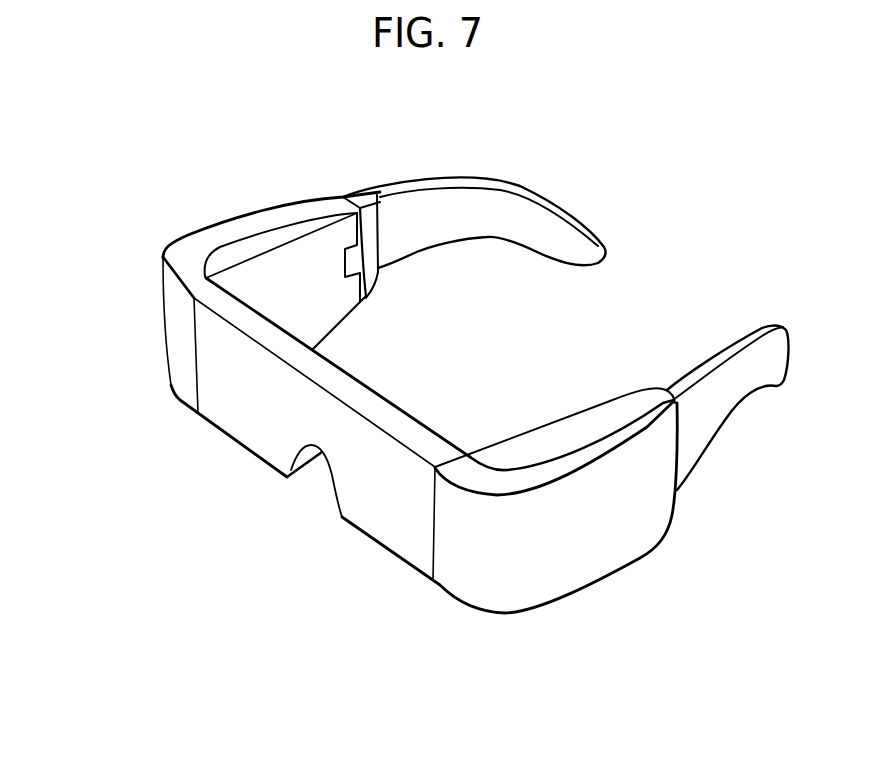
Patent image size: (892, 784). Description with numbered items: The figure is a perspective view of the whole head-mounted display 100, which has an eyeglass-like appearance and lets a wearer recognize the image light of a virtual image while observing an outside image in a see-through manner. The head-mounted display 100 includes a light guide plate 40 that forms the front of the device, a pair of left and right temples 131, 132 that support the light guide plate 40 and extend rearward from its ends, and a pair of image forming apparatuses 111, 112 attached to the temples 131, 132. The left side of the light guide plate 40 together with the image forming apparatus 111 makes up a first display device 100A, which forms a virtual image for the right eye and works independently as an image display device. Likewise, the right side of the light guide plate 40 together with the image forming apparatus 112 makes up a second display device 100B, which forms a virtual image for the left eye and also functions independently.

The head-mounted display 100 is at (600, 113).
The first display device 100A is at (149, 190).
The second display device 100B is at (763, 606).
The light guide plate 40 is at (265, 445).
The image forming apparatus 111 is at (327, 312).
The image forming apparatus 112 is at (547, 447).
The temple 131 is at (288, 162).
The temple 132 is at (640, 591).